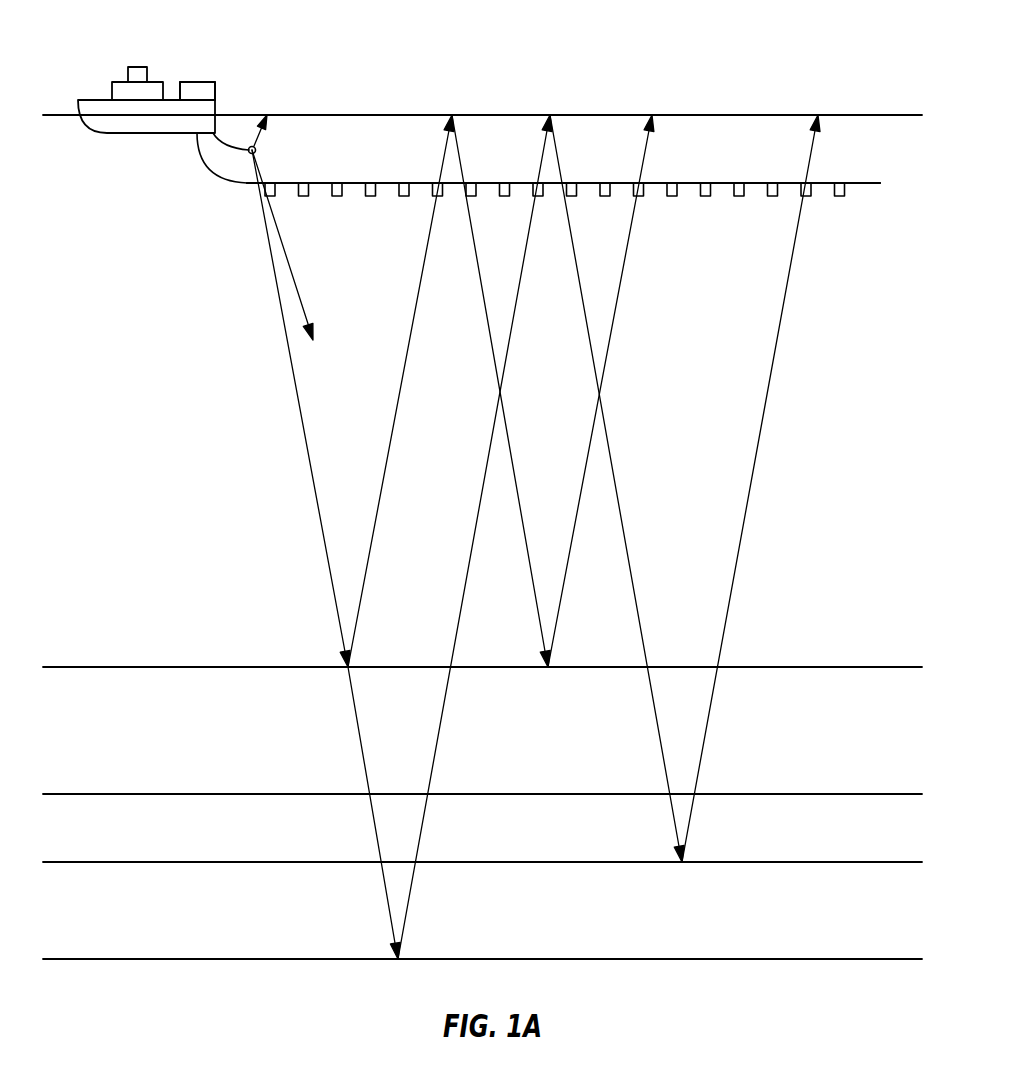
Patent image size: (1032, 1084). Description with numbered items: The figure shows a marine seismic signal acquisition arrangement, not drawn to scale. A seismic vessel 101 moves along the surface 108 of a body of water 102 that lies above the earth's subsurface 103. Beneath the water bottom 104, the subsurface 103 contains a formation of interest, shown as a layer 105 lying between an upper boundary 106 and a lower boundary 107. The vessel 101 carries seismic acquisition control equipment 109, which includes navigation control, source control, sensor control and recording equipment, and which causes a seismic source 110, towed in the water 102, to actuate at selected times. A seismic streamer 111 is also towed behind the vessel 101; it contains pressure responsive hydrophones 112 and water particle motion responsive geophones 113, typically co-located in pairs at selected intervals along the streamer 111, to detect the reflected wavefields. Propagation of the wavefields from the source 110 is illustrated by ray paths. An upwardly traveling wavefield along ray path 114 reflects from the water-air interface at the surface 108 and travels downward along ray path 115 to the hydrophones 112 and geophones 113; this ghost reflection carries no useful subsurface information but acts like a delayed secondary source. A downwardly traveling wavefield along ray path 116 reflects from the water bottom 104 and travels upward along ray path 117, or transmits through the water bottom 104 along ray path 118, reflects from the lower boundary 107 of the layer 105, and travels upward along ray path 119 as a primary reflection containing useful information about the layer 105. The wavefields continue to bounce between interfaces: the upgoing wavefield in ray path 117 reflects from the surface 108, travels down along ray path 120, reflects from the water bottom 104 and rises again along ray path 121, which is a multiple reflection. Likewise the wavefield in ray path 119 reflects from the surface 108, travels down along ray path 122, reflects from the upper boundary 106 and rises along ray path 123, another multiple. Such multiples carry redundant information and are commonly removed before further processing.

The seismic vessel 101 is at (138, 67).
The seismic acquisition control equipment 109 is at (200, 82).
The water surface 108 is at (588, 115).
The seismic source 110 is at (251, 157).
The ray path 114 is at (248, 151).
The seismic streamer 111 is at (722, 183).
The hydrophones 112 is at (343, 183).
The geophones 113 is at (375, 183).
The body of water 102 is at (165, 397).
The earth's subsurface 103 is at (192, 751).
The water bottom 104 is at (147, 667).
The layer 105 is at (587, 925).
The upper boundary 106 is at (147, 862).
The lower boundary 107 is at (147, 959).
The ray path 115 is at (292, 262).
The ray path 116 is at (316, 502).
The ray path 117 is at (381, 500).
The ray path 118 is at (363, 750).
The ray path 119 is at (436, 750).
The ray path 120 is at (540, 630).
The ray path 121 is at (556, 630).
The ray path 122 is at (662, 750).
The ray path 123 is at (703, 750).